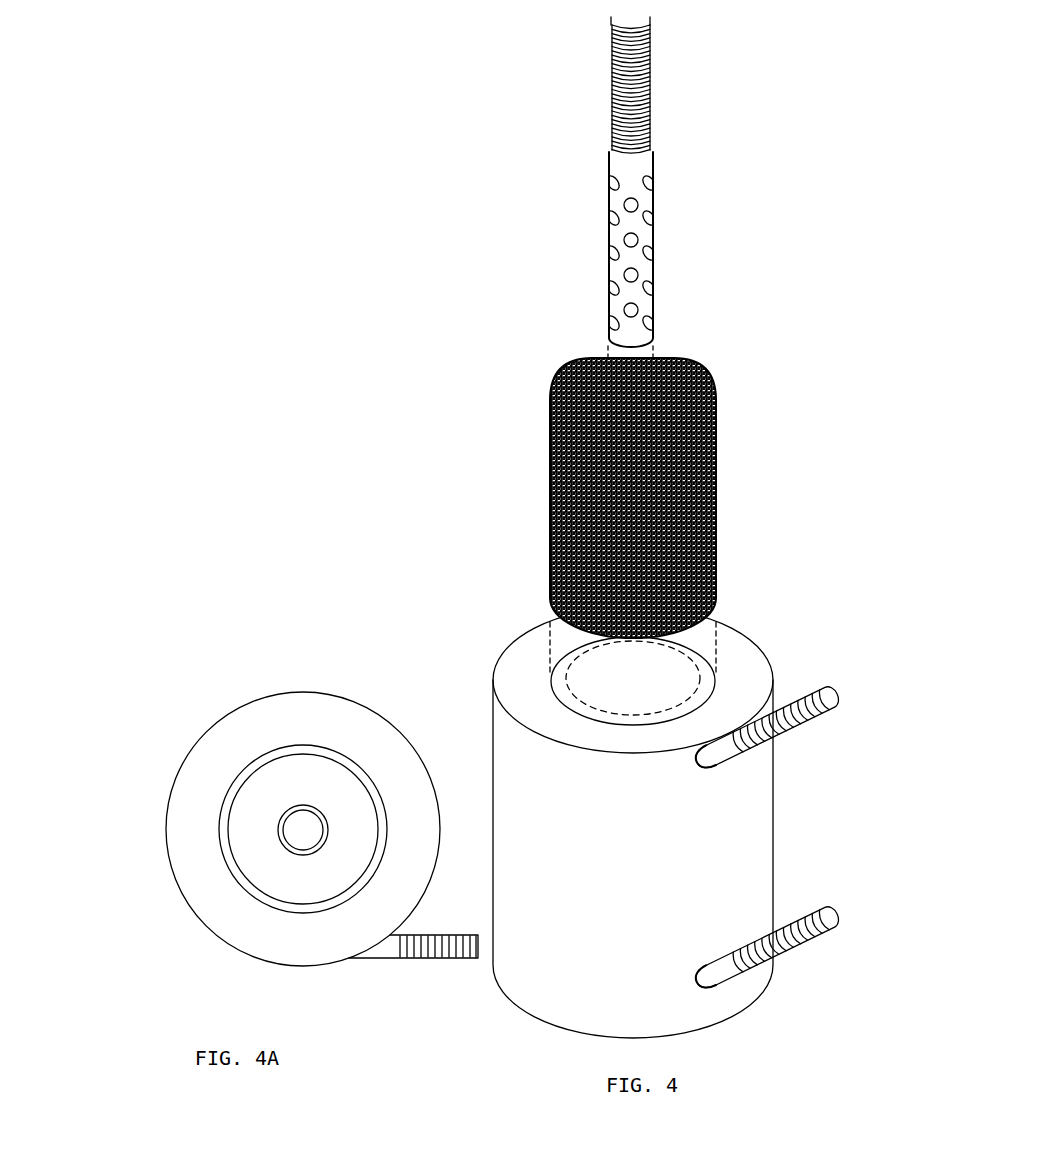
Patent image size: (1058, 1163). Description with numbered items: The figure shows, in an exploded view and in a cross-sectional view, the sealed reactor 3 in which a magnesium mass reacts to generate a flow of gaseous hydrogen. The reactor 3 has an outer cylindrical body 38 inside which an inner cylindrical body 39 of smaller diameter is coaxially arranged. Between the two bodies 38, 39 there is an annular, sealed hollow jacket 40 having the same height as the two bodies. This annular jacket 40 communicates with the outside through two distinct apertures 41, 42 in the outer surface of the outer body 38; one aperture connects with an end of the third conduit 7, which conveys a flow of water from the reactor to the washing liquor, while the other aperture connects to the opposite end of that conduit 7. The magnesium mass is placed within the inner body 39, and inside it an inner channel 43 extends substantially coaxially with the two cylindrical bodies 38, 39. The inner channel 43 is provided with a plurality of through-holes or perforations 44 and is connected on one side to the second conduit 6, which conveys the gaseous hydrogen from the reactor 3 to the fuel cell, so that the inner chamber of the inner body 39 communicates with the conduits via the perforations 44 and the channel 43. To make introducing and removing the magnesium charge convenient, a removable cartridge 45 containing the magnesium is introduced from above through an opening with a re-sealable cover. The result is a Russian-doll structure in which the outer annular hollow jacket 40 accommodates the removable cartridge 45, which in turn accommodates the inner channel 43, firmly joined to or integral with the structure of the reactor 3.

In FIG. 4, the sealed reactor 3 is at (484, 368).
In FIG. 4A, the sealed reactor 3 is at (200, 680).
In FIG. 4, the second conduit 6 is at (614, 89).
In FIG. 4, the third conduit 7 is at (848, 693).
In FIG. 4A, the third conduit 7 is at (427, 962).
In FIG. 4, the outer cylindrical body 38 is at (500, 735).
In FIG. 4A, the outer cylindrical body 38 is at (190, 752).
In FIG. 4, the inner cylindrical body 39 is at (623, 722).
In FIG. 4A, the inner cylindrical body 39 is at (233, 863).
In FIG. 4, the annular hollow jacket 40 is at (745, 690).
In FIG. 4A, the annular hollow jacket 40 is at (197, 827).
In FIG. 4, the aperture 41 is at (723, 760).
In FIG. 4, the aperture 42 is at (723, 980).
In FIG. 4, the inner channel 43 is at (681, 249).
In FIG. 4A, the inner channel 43 is at (315, 853).
In FIG. 4, the perforations 44 is at (652, 216).
In FIG. 4, the removable cartridge 45 is at (717, 495).
In FIG. 4A, the removable cartridge 45 is at (357, 735).